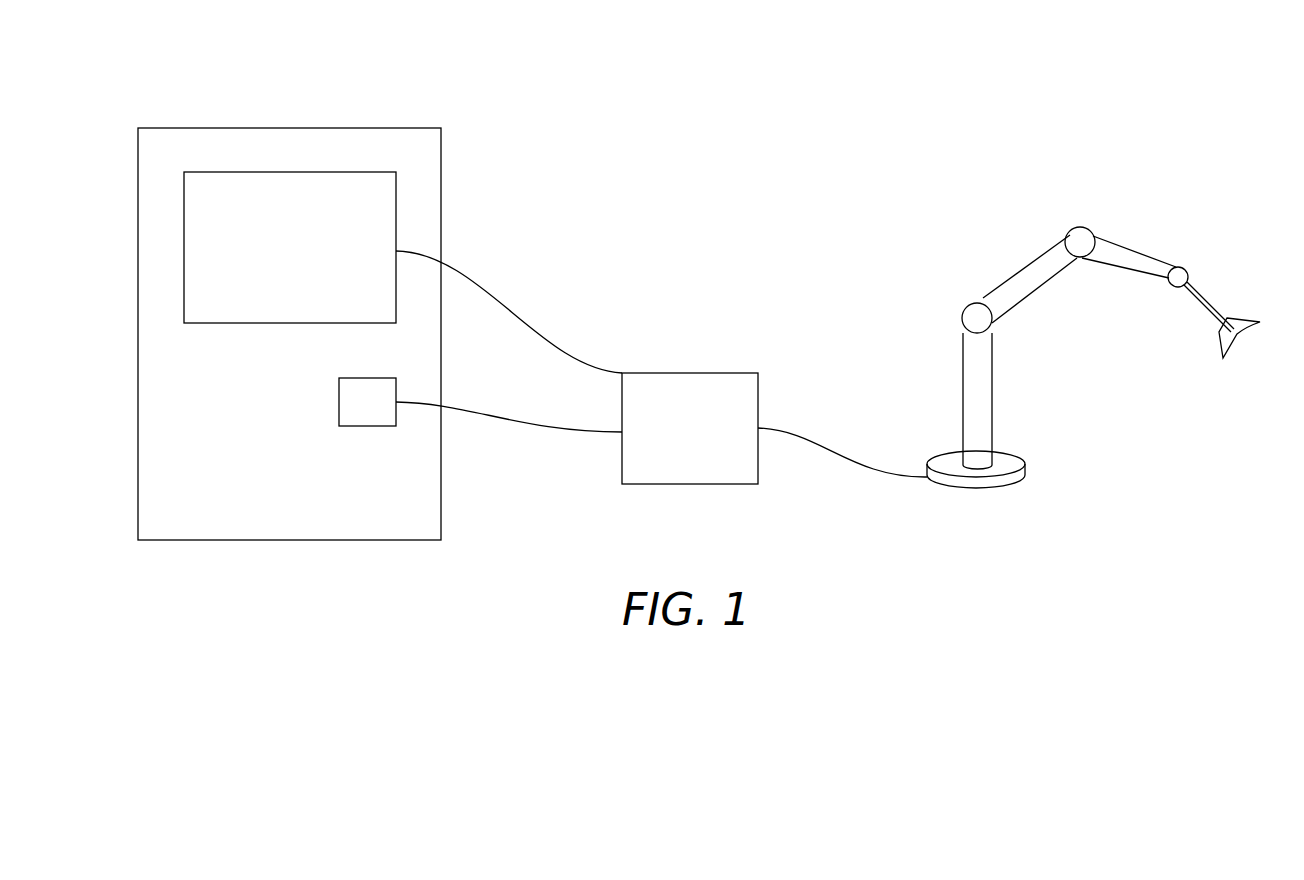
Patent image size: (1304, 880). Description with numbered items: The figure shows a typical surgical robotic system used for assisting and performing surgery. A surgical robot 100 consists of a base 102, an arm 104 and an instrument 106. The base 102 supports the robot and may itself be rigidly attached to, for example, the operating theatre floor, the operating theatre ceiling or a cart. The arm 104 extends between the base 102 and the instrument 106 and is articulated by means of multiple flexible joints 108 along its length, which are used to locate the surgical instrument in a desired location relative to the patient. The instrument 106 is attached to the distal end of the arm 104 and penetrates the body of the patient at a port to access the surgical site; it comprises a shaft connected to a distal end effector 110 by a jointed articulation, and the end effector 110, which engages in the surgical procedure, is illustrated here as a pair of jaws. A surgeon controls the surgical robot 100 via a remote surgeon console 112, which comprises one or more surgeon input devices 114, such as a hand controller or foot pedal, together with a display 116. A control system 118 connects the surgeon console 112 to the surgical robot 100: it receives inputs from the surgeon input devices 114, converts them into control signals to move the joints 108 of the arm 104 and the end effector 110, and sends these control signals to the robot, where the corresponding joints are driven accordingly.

The surgical robot 100 is at (1101, 323).
The base 102 is at (1025, 467).
The arm 104 is at (1048, 295).
The instrument 106 is at (1215, 293).
The flexible joints 108 is at (967, 307).
The end effector 110 is at (1229, 349).
The surgeon console 112 is at (402, 92).
The surgeon input devices 114 is at (339, 388).
The display 116 is at (184, 181).
The control system 118 is at (730, 485).